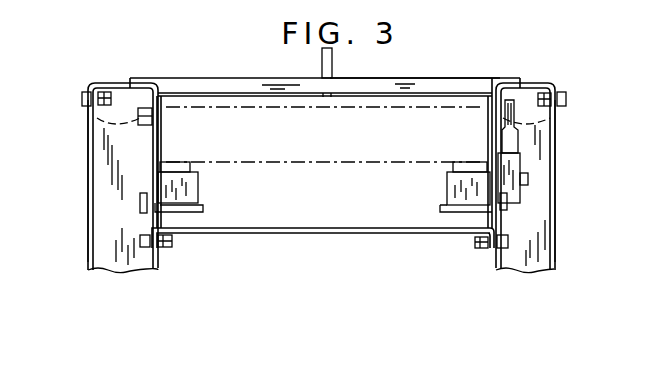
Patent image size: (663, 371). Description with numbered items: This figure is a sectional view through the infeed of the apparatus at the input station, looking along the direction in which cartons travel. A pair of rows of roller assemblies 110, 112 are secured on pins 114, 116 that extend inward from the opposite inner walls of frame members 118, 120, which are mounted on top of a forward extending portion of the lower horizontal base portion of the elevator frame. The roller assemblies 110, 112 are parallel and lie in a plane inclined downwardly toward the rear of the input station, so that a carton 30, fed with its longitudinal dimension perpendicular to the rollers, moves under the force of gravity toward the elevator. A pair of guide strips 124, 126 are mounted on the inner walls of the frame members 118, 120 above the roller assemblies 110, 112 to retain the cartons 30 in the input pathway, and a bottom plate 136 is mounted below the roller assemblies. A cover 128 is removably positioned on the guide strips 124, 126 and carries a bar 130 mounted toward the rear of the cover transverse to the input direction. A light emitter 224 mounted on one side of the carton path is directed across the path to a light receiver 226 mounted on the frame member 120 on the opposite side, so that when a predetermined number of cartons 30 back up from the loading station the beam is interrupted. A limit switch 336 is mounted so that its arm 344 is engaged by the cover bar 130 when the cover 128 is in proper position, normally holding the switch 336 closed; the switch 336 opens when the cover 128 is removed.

The carton 30 is at (293, 162).
The roller assemblies 110 is at (190, 183).
The roller assemblies 112 is at (446, 190).
The pin 114 is at (170, 212).
The pin 116 is at (462, 212).
The frame member 118 is at (117, 180).
The frame member 120 is at (546, 180).
The guide strip 124 is at (162, 90).
The guide strip 126 is at (491, 93).
The cover 128 is at (231, 96).
The bar 130 is at (409, 78).
The bottom plate 136 is at (297, 233).
The light emitter 224 is at (92, 123).
The light receiver 226 is at (556, 131).
The limit switch 336 is at (520, 192).
The arm 344 is at (520, 145).